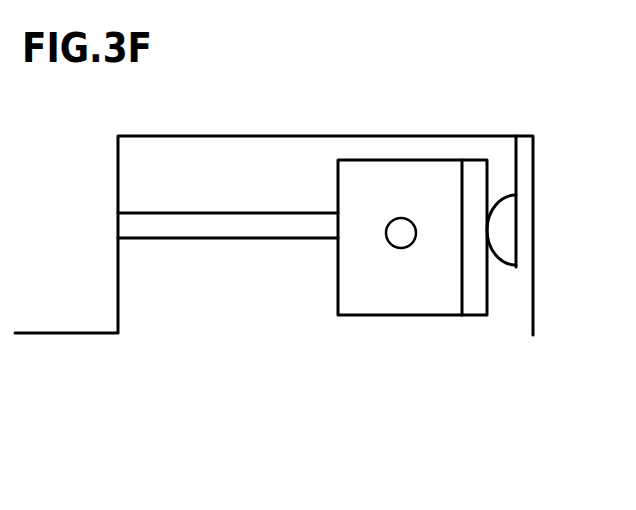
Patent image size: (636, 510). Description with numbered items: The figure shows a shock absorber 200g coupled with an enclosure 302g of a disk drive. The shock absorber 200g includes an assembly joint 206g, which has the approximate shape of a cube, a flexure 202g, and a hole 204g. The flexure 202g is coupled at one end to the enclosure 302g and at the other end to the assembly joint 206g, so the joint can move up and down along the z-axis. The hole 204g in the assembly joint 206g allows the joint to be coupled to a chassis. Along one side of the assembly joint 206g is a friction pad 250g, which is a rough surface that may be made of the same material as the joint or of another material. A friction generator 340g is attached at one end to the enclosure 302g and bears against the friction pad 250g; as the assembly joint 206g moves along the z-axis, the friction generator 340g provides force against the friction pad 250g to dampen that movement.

The enclosure 302g is at (301, 249).
The shock absorber 200g is at (342, 275).
The flexure 202g is at (193, 227).
The hole 204g is at (401, 236).
The assembly joint 206g is at (363, 293).
The friction pad 250g is at (479, 293).
The friction generator 340g is at (505, 232).